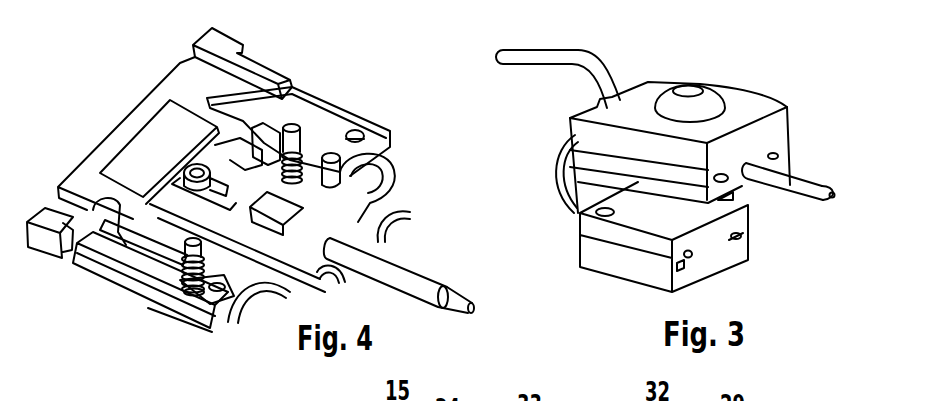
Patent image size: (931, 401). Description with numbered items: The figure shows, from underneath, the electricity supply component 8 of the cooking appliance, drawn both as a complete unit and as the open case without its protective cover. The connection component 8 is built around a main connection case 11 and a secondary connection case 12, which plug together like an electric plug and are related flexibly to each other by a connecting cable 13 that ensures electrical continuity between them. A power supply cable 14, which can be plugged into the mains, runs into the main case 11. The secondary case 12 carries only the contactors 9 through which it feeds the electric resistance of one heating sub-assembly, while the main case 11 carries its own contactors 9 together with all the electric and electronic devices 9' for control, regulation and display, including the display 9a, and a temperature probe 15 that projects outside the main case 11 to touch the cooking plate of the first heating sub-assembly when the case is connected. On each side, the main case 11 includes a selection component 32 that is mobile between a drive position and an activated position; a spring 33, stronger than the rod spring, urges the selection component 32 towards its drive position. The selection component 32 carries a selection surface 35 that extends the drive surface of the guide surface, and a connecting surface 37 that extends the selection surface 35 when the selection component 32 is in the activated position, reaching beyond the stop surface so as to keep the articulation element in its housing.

In FIG. 3, the electricity supply component 8 is at (750, 74).
In FIG. 4, the contactors 9 is at (316, 256).
In FIG. 4, the electric and electronic devices 9' is at (126, 109).
In FIG. 3, the electric and electronic devices 9' is at (807, 163).
In FIG. 3, the display 9a is at (688, 86).
In FIG. 3, the main connection case 11 is at (787, 115).
In FIG. 3, the secondary connection case 12 is at (723, 259).
In FIG. 3, the connecting cable 13 is at (548, 194).
In FIG. 3, the power supply cable 14 is at (559, 72).
In FIG. 4, the temperature probe 15 is at (400, 273).
In FIG. 3, the temperature probe 15 is at (790, 190).
In FIG. 4, the selection component 32 is at (143, 197).
In FIG. 4, the spring 33 is at (348, 162).
In FIG. 4, the selection surface 35 is at (156, 274).
In FIG. 4, the connecting surface 37 is at (89, 220).